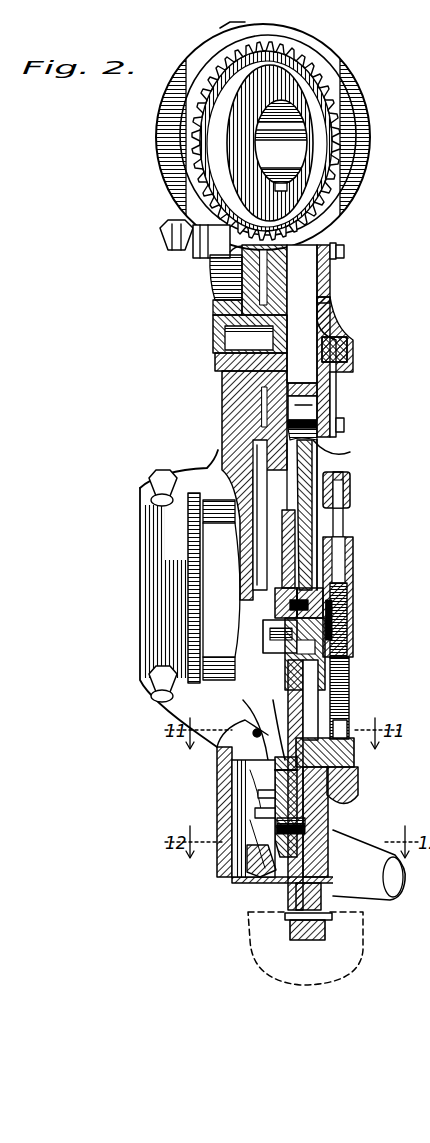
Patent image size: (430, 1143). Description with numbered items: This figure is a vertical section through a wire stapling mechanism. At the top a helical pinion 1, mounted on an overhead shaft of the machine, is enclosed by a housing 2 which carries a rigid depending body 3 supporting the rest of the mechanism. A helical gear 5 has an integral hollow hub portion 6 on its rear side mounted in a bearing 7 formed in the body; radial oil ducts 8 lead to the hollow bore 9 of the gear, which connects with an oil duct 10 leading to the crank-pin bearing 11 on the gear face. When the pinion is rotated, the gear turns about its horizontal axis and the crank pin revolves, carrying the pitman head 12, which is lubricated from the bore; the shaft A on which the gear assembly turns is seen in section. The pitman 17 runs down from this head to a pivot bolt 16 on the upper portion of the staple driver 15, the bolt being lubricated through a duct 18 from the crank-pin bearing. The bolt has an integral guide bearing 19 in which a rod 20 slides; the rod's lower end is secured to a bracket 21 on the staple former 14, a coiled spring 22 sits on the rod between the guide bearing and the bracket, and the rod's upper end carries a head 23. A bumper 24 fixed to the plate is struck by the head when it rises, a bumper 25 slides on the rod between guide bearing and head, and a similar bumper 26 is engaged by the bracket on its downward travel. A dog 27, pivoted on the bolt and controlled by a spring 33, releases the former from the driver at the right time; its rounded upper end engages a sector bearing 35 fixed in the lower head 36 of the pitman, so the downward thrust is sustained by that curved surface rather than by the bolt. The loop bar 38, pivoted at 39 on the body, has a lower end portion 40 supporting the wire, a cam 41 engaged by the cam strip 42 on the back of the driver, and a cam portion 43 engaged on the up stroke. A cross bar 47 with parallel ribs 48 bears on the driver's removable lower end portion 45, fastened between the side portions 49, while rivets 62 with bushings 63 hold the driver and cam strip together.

The helical pinion 1 is at (323, 131).
The housing 2 is at (338, 72).
The depending body 3 is at (237, 415).
The helical gear 5 is at (290, 257).
The hub portion 6 is at (255, 318).
The bearing 7 is at (240, 362).
The radial oil ducts 8 is at (276, 345).
The shaft A is at (292, 318).
The hollow bore 9 is at (313, 372).
The bumper 24 is at (351, 361).
The oil duct 10 is at (273, 376).
The crank-pin bearing 11 is at (305, 403).
The pitman head 12 is at (312, 437).
The head 23 is at (350, 490).
The duct 18 is at (307, 528).
The rod 20 is at (345, 528).
The bumper 25 is at (352, 552).
The pitman 17 is at (318, 578).
The lower head 36 is at (278, 592).
The sector bearing 35 is at (280, 611).
The pivot bolt 16 is at (268, 632).
The guide bearing 19 is at (348, 594).
The spring 33 is at (350, 617).
The coiled spring 22 is at (346, 682).
The cam portion 43 is at (268, 735).
The dog 27 is at (312, 686).
The pivot 39 is at (253, 735).
The staple driver 15 is at (290, 758).
The bushings 63 is at (285, 771).
The rivets 62 is at (160, 790).
The cam 41 is at (270, 795).
The loop bar 38 is at (262, 813).
The bracket 21 is at (348, 762).
The bumper 26 is at (355, 782).
The staple former 14 is at (316, 812).
The cross bar 47 is at (276, 829).
The parallel ribs 48 is at (300, 822).
The cam strip 42 is at (262, 846).
The lower end portion 40 is at (292, 890).
The lower end portion 45 is at (290, 890).
The side portions 49 is at (292, 925).